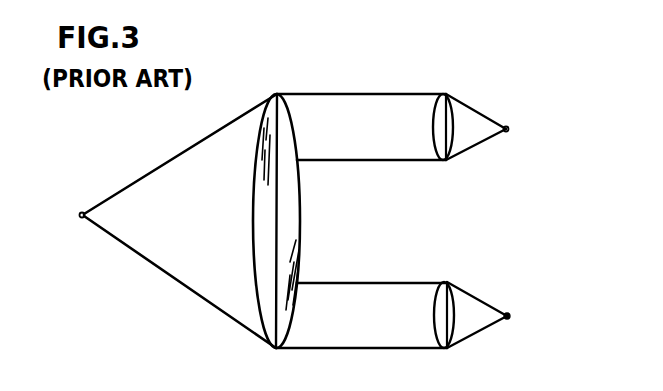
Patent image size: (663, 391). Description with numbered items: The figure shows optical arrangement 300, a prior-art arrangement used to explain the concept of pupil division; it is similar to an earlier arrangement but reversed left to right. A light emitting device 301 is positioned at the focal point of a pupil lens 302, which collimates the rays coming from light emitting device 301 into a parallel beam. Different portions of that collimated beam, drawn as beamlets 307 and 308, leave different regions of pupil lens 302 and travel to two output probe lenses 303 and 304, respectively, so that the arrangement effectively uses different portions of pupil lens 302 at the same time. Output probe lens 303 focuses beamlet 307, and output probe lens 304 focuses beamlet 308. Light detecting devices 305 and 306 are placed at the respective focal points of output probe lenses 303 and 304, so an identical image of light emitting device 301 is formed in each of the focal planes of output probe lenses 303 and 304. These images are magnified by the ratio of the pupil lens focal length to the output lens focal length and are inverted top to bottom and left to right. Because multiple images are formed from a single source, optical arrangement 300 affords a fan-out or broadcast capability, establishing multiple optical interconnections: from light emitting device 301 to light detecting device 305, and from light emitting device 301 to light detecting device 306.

The optical arrangement 300 is at (624, 204).
The light emitting device 301 is at (79, 221).
The pupil lens 302 is at (282, 120).
The output probe lens 303 is at (458, 98).
The output probe lens 304 is at (460, 289).
The light detecting device 305 is at (510, 128).
The light detecting device 306 is at (509, 315).
The beamlet 307 is at (362, 162).
The beamlet 308 is at (397, 284).